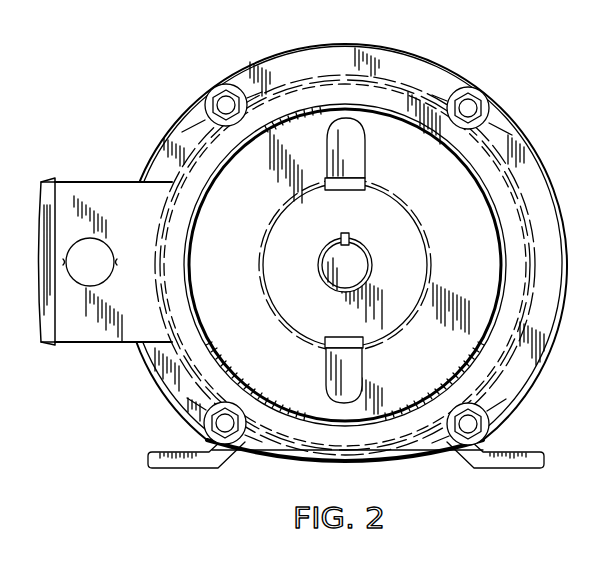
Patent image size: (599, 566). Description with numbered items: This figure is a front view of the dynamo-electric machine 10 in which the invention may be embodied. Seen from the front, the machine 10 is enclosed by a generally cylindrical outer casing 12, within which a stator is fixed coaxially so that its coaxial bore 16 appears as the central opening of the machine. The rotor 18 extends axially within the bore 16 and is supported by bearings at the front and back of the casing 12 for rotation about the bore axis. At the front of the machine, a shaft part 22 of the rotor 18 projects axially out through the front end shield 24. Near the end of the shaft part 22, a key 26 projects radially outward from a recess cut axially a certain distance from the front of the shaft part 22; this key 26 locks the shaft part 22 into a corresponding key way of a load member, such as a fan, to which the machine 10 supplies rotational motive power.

The dynamo-electric machine 10 is at (303, 240).
The outer casing 12 is at (398, 86).
The bore 16 is at (427, 236).
The rotor 18 is at (428, 268).
The shaft part 22 is at (330, 252).
The front end shield 24 is at (300, 100).
The key 26 is at (348, 236).